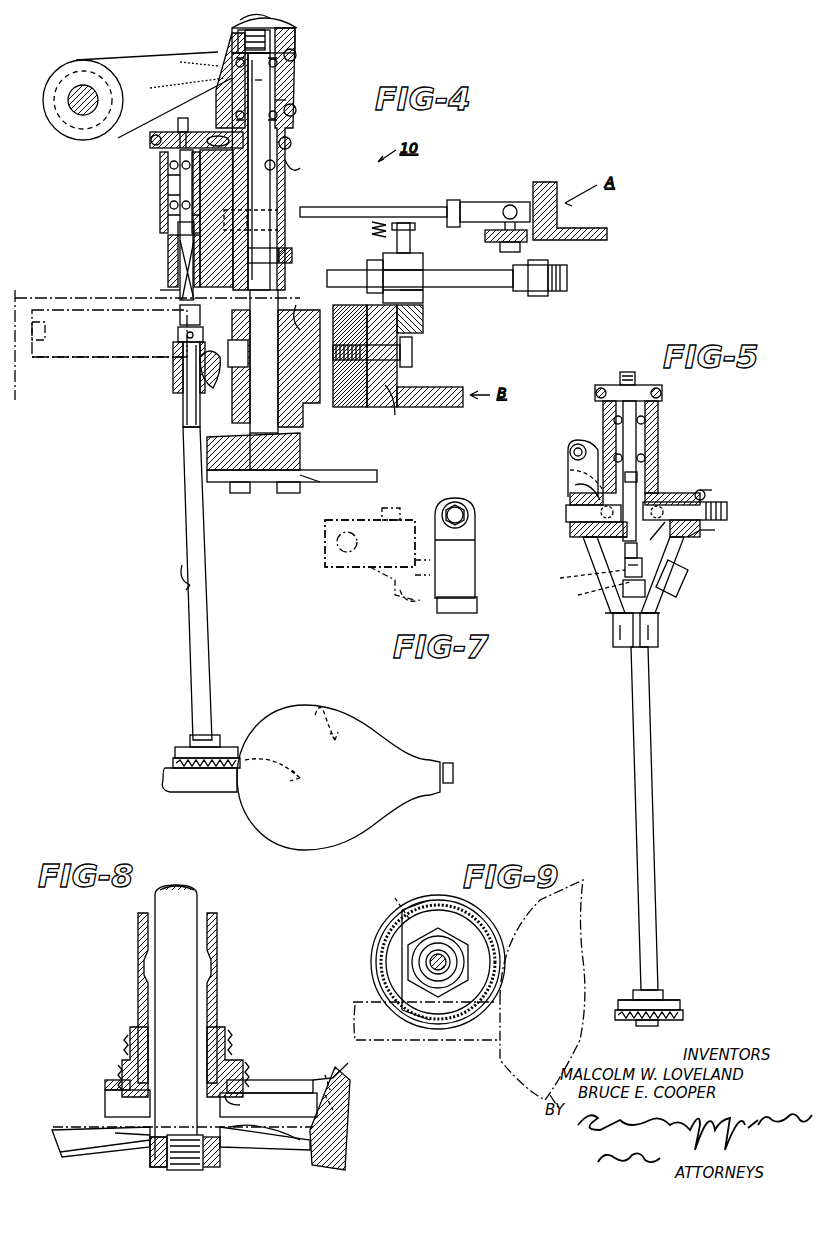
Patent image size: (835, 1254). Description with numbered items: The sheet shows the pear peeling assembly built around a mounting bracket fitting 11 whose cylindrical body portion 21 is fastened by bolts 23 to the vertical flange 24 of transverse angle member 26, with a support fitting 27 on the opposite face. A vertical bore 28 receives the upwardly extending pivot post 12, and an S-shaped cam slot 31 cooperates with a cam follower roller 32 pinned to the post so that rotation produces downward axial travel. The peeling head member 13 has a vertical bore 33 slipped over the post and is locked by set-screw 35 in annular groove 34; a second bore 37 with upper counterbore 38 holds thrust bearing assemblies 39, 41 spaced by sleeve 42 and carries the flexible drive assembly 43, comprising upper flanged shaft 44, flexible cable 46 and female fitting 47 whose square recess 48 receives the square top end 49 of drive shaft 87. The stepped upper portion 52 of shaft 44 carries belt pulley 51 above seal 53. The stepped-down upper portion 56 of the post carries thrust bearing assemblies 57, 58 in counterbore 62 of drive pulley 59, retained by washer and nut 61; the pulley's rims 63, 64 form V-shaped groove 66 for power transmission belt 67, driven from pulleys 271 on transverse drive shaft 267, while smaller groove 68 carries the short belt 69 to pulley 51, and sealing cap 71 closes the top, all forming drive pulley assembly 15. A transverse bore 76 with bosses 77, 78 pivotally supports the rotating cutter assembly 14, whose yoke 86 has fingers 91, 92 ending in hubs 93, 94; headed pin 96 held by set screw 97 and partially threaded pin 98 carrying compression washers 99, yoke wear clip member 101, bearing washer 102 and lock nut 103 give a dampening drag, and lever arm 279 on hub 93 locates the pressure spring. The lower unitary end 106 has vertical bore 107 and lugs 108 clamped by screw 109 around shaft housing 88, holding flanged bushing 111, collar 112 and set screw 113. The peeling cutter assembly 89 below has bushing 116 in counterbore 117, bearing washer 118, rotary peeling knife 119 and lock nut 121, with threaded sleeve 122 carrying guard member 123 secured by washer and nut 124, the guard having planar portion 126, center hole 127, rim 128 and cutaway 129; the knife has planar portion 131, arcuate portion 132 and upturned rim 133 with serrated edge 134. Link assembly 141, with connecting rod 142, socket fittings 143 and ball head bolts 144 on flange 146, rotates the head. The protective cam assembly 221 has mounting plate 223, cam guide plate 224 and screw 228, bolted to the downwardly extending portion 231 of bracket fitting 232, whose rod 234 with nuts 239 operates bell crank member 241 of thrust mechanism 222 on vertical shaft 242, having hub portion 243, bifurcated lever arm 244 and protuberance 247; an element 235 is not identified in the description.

In FIG. 4, the mounting bracket fitting 11 is at (355, 410).
In FIG. 4, the pivot post 12 is at (270, 182).
In FIG. 4, the peeling head drive and support member 13 is at (144, 211).
In FIG. 5, the peeling head drive and support member 13 is at (668, 441).
In FIG. 4, the rotating cutter assembly 14 is at (175, 532).
In FIG. 5, the rotating cutter assembly 14 is at (675, 648).
In FIG. 4, the drive pulley assembly 15 is at (304, 91).
In FIG. 4, the cylindrical body portion 21 is at (305, 400).
In FIG. 4, the bolts 23 is at (405, 352).
In FIG. 4, the vertical flange 24 is at (400, 325).
In FIG. 4, the transverse angle member 26 is at (452, 382).
In FIG. 4, the support fitting 27 is at (399, 409).
In FIG. 4, the vertical bore 28 is at (299, 310).
In FIG. 4, the cam slot 31 is at (240, 400).
In FIG. 4, the cam follower roller 32 is at (240, 360).
In FIG. 4, the vertical bore 33 is at (275, 165).
In FIG. 4, the annular groove 34 is at (270, 252).
In FIG. 4, the set-screw 35 is at (292, 256).
In FIG. 4, the second bore 37 is at (180, 240).
In FIG. 5, the second bore 37 is at (638, 480).
In FIG. 4, the upper counterbore 38 is at (168, 183).
In FIG. 4, the upper thrust bearing assembly 39 is at (162, 162).
In FIG. 4, the lower thrust bearing assembly 41 is at (182, 213).
In FIG. 4, the sleeve 42 is at (170, 190).
In FIG. 4, the flexible drive assembly 43 is at (178, 298).
In FIG. 4, the upper flanged shaft 44 is at (178, 228).
In FIG. 4, the flexible cable 46 is at (176, 260).
In FIG. 4, the female fitting 47 is at (180, 312).
In FIG. 5, the female fitting 47 is at (625, 565).
In FIG. 5, the square recess 48 is at (590, 592).
In FIG. 5, the top end of drive shaft 49 is at (579, 578).
In FIG. 4, the belt pulley 51 is at (164, 132).
In FIG. 5, the belt pulley 51 is at (606, 385).
In FIG. 4, the upper portion of shaft 52 is at (190, 128).
In FIG. 4, the seal 53 is at (152, 138).
In FIG. 4, the upper portion of pivot post 56 is at (258, 80).
In FIG. 4, the thrust bearing assembly 57 is at (296, 55).
In FIG. 4, the thrust bearing assembly 58 is at (296, 110).
In FIG. 4, the drive pulley 59 is at (270, 53).
In FIG. 4, the washer and nut 61 is at (262, 45).
In FIG. 4, the counterbore 62 is at (277, 100).
In FIG. 4, the upper rim 63 is at (220, 40).
In FIG. 4, the lower rim 64 is at (218, 72).
In FIG. 4, the annular V-shaped groove 66 is at (214, 56).
In FIG. 4, the power transmission belt 67 is at (122, 60).
In FIG. 4, the second annular groove 68 is at (290, 162).
In FIG. 4, the short belt 69 is at (292, 141).
In FIG. 5, the short belt 69 is at (596, 393).
In FIG. 4, the removable sealing cap 71 is at (245, 25).
In FIG. 5, the transverse bore 76 is at (585, 537).
In FIG. 5, the boss 77 is at (580, 483).
In FIG. 5, the boss 78 is at (660, 500).
In FIG. 5, the yoke 86 is at (599, 604).
In FIG. 4, the drive shaft 87 is at (187, 420).
In FIG. 8, the drive shaft 87 is at (190, 905).
In FIG. 9, the drive shaft 87 is at (440, 950).
In FIG. 5, the shaft housing 88 is at (650, 740).
In FIG. 8, the shaft housing 88 is at (212, 937).
In FIG. 9, the shaft housing 88 is at (452, 945).
In FIG. 4, the peeling cutter assembly 89 is at (178, 732).
In FIG. 5, the peeling cutter assembly 89 is at (676, 982).
In FIG. 8, the peeling cutter assembly 89 is at (249, 1038).
In FIG. 9, the peeling cutter assembly 89 is at (446, 892).
In FIG. 5, the finger 91 is at (590, 545).
In FIG. 4, the finger 92 is at (477, 605).
In FIG. 5, the finger 92 is at (672, 565).
In FIG. 5, the hub-shaped end 93 is at (570, 498).
In FIG. 5, the hub-shaped end 94 is at (690, 490).
In FIG. 5, the headed pin 96 is at (566, 515).
In FIG. 5, the set screw 97 is at (575, 468).
In FIG. 4, the partially threaded pin 98 is at (460, 505).
In FIG. 5, the partially threaded pin 98 is at (727, 510).
In FIG. 5, the compression washers 99 is at (705, 492).
In FIG. 4, the yoke wear clip member 101 is at (470, 552).
In FIG. 5, the yoke wear clip member 101 is at (695, 540).
In FIG. 5, the bearing washer 102 is at (712, 495).
In FIG. 5, the lock nut 103 is at (715, 527).
In FIG. 5, the lower unitary end 106 is at (620, 647).
In FIG. 5, the vertical bore 107 is at (620, 636).
In FIG. 5, the lugs 108 is at (633, 655).
In FIG. 5, the screw 109 is at (613, 628).
In FIG. 4, the flanged bushing 111 is at (178, 370).
In FIG. 4, the collar 112 is at (178, 334).
In FIG. 5, the collar 112 is at (648, 592).
In FIG. 4, the set screw 113 is at (175, 350).
In FIG. 8, the bushing 116 is at (215, 1030).
In FIG. 8, the counterbore 117 is at (218, 1035).
In FIG. 8, the bearing washer 118 is at (225, 1145).
In FIG. 5, the rotary peeling knife 119 is at (624, 1021).
In FIG. 8, the rotary peeling knife 119 is at (278, 1153).
In FIG. 9, the rotary peeling knife 119 is at (364, 955).
In FIG. 8, the lock nut 121 is at (158, 1160).
In FIG. 8, the exteriorly threaded sleeve 122 is at (128, 1035).
In FIG. 5, the guard member 123 is at (685, 1002).
In FIG. 8, the guard member 123 is at (302, 1075).
In FIG. 9, the guard member 123 is at (392, 982).
In FIG. 8, the washer and nut 124 is at (250, 1078).
In FIG. 8, the central planar portion 126 is at (273, 1080).
In FIG. 8, the center hole 127 is at (228, 1100).
In FIG. 8, the downwardly depending rim 128 is at (340, 1082).
In FIG. 8, the cutaway segment 129 is at (100, 1100).
In FIG. 9, the cutaway segment 129 is at (402, 930).
In FIG. 8, the central planar portion 131 is at (145, 1140).
In FIG. 8, the intermediate arcuate portion 132 is at (90, 1150).
In FIG. 8, the upturned annular rim 133 is at (55, 1140).
In FIG. 8, the edge 134 is at (130, 1120).
In FIG. 9, the edge 134 is at (385, 930).
In FIG. 4, the link assembly 141 is at (386, 209).
In FIG. 4, the threaded connecting rod 142 is at (432, 205).
In FIG. 4, the socket fittings 143 is at (262, 214).
In FIG. 4, the ball head bolts 144 is at (512, 208).
In FIG. 4, the rearwardly extending flange 146 is at (487, 236).
In FIG. 4, the protective cam assembly 221 is at (266, 498).
In FIG. 4, the thrust mechanism 222 is at (348, 572).
In FIG. 4, the mounting plate 223 is at (315, 482).
In FIG. 4, the cam guide plate 224 is at (377, 472).
In FIG. 4, the screw 228 is at (290, 495).
In FIG. 4, the downwardly extending portion 231 is at (300, 450).
In FIG. 4, the bracket fitting 232 is at (68, 357).
In FIG. 4, the forwardly extending rod 234 is at (517, 285).
In FIG. 4, the collar 235 is at (378, 262).
In FIG. 4, the nuts 239 is at (548, 290).
In FIG. 4, the bell crank member 241 is at (400, 512).
In FIG. 4, the vertical shaft 242 is at (412, 230).
In FIG. 4, the central hub portion 243 is at (423, 292).
In FIG. 4, the bifurcated lever arm 244 is at (400, 258).
In FIG. 4, the protuberance 247 is at (410, 602).
In FIG. 4, the transverse drive shaft 267 is at (75, 95).
In FIG. 4, the pulleys 271 is at (70, 138).
In FIG. 5, the lever arm 279 is at (570, 455).